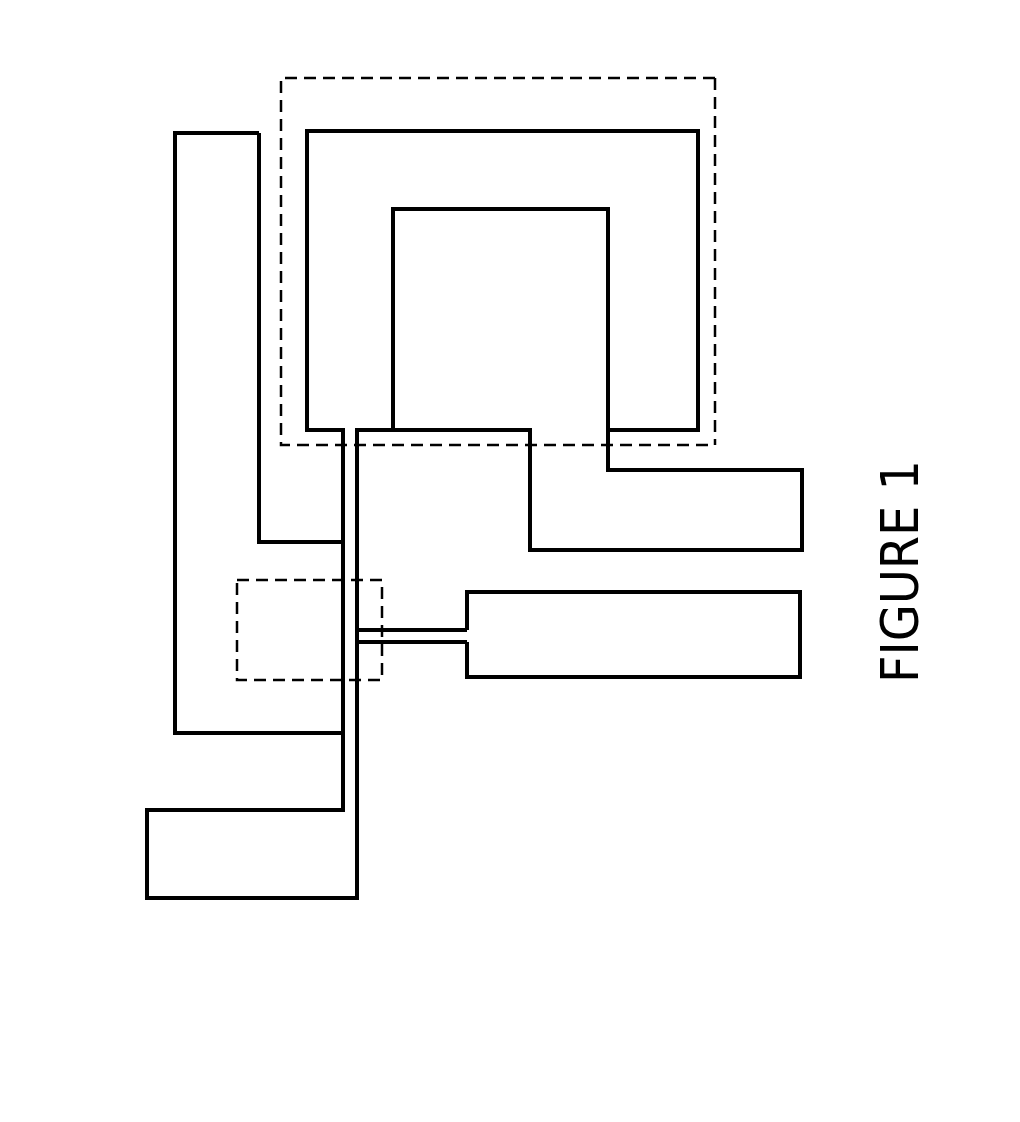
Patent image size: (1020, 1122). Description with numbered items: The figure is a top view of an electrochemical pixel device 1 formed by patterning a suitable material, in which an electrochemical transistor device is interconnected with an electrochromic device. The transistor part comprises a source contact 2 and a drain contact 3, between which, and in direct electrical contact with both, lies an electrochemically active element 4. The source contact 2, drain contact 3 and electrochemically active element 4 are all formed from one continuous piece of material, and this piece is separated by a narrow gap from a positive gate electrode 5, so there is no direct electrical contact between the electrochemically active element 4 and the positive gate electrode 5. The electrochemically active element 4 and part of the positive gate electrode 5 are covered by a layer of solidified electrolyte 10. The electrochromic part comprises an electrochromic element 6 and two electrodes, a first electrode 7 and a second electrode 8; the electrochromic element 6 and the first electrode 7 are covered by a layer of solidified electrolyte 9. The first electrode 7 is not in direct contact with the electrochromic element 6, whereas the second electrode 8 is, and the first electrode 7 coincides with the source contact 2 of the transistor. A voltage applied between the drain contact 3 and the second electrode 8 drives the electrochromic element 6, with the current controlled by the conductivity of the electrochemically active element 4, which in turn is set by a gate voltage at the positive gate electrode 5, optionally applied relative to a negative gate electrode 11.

The electrochemical pixel device 1 is at (133, 505).
The source contact 2 is at (348, 518).
The drain contact 3 is at (350, 773).
The electrochemically active element 4 is at (350, 635).
The positive gate electrode 5 is at (312, 705).
The electrochromic element 6 is at (478, 363).
The first electrode 7 is at (348, 158).
The second electrode 8 is at (692, 487).
The solidified electrolyte 9 is at (715, 260).
The solidified electrolyte 10 is at (237, 632).
The negative gate electrode 11 is at (602, 653).